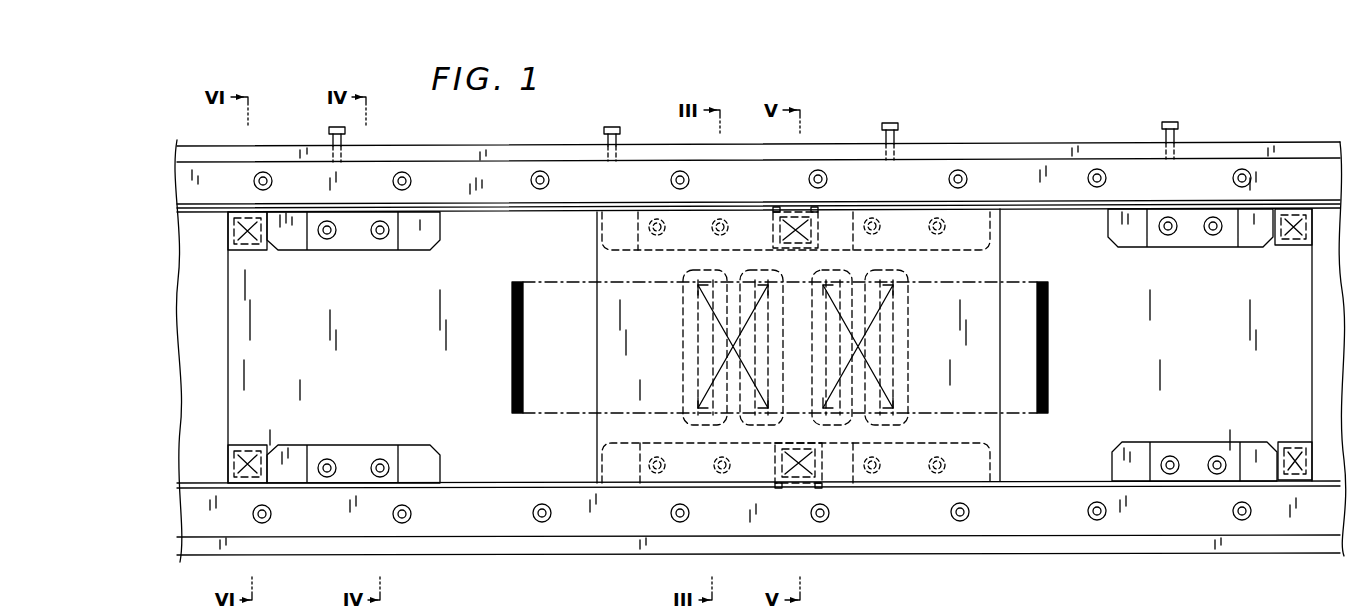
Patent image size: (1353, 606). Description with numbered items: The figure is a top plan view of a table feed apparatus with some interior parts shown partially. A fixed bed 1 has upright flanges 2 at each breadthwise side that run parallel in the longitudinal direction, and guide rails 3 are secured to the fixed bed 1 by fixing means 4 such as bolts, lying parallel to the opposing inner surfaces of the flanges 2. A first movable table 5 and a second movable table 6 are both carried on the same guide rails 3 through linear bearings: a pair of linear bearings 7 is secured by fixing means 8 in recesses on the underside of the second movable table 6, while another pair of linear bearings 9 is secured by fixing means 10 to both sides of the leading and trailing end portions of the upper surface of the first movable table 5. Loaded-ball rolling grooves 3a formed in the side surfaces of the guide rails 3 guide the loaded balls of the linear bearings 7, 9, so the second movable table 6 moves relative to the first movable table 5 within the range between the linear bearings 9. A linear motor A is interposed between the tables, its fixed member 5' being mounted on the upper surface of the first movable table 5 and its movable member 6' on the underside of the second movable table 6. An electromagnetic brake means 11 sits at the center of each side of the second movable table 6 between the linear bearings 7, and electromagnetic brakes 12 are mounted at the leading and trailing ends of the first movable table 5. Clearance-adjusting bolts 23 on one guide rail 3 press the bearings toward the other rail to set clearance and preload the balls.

The fixed bed 1 is at (205, 384).
The flanges 2 is at (236, 147).
The guide rails 3 is at (178, 188).
The loaded-ball rolling grooves 3a is at (206, 212).
The fixing means 4 is at (406, 175).
The first movable table 5 is at (753, 346).
The fixed member 5' is at (780, 366).
The second movable table 6 is at (770, 346).
The movable member 6' is at (820, 347).
The linear bearings 7 is at (638, 212).
The fixing means 8 is at (655, 236).
The linear bearings 9 is at (330, 250).
The fixing means 10 is at (323, 238).
The electromagnetic brake means 11 is at (796, 212).
The electromagnetic brakes 12 is at (232, 233).
The clearance-adjusting bolts 23 is at (329, 129).
The linear motor A is at (682, 369).